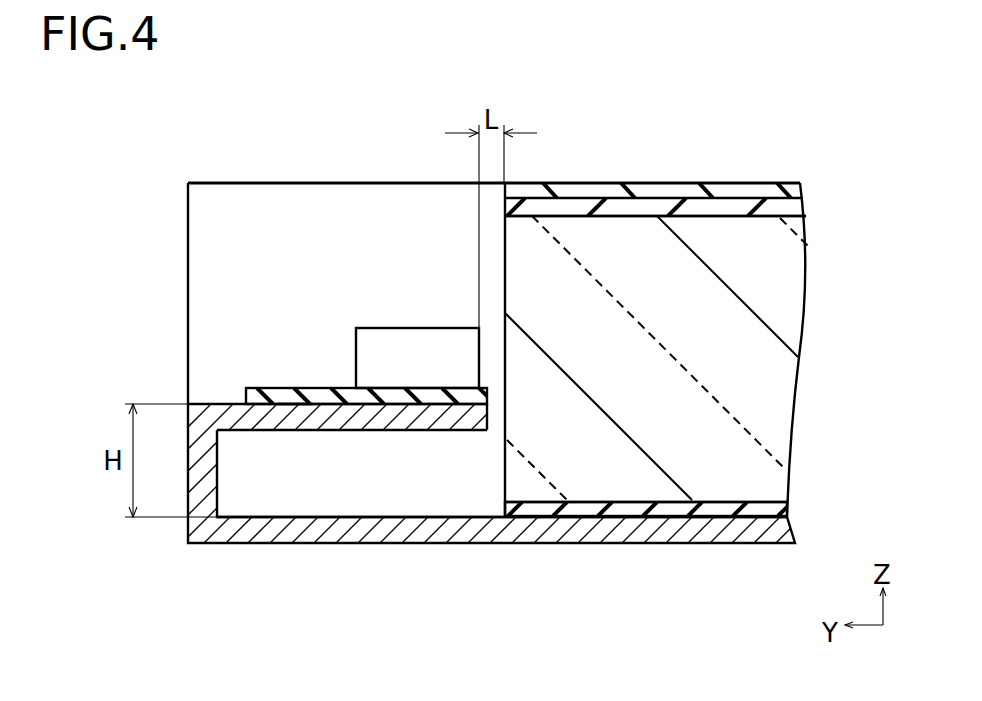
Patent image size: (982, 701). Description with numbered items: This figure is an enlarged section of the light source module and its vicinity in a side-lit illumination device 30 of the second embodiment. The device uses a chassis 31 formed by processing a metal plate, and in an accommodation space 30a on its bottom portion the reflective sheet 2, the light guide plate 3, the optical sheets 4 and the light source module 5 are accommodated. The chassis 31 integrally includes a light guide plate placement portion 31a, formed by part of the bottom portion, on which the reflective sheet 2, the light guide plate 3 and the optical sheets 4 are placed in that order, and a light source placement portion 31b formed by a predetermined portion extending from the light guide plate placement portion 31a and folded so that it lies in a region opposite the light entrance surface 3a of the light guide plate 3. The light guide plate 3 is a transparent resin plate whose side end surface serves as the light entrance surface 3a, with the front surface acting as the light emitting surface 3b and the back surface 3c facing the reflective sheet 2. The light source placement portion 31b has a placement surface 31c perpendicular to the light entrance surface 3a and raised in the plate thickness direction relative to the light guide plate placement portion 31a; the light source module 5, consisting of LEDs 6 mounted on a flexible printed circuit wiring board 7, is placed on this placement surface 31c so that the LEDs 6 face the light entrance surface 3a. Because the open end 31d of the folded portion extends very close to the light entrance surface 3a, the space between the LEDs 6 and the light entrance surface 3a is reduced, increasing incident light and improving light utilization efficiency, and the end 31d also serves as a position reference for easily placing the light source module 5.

The reflective sheet 2 is at (780, 508).
The light guide plate 3 is at (788, 382).
The light entrance surface 3a is at (505, 463).
The light emitting surface 3b is at (646, 215).
The back surface 3c is at (626, 503).
The optical sheets 4 is at (795, 193).
The light source module 5 is at (253, 118).
The LED 6 is at (382, 350).
The flexible printed circuit wiring board 7 is at (348, 396).
The illumination device 30 is at (778, 142).
The accommodation space 30a is at (410, 274).
The chassis 31 is at (788, 533).
The light guide plate placement portion 31a is at (546, 537).
The light source placement portion 31b is at (347, 423).
The placement surface 31c is at (313, 403).
The end 31d is at (477, 425).